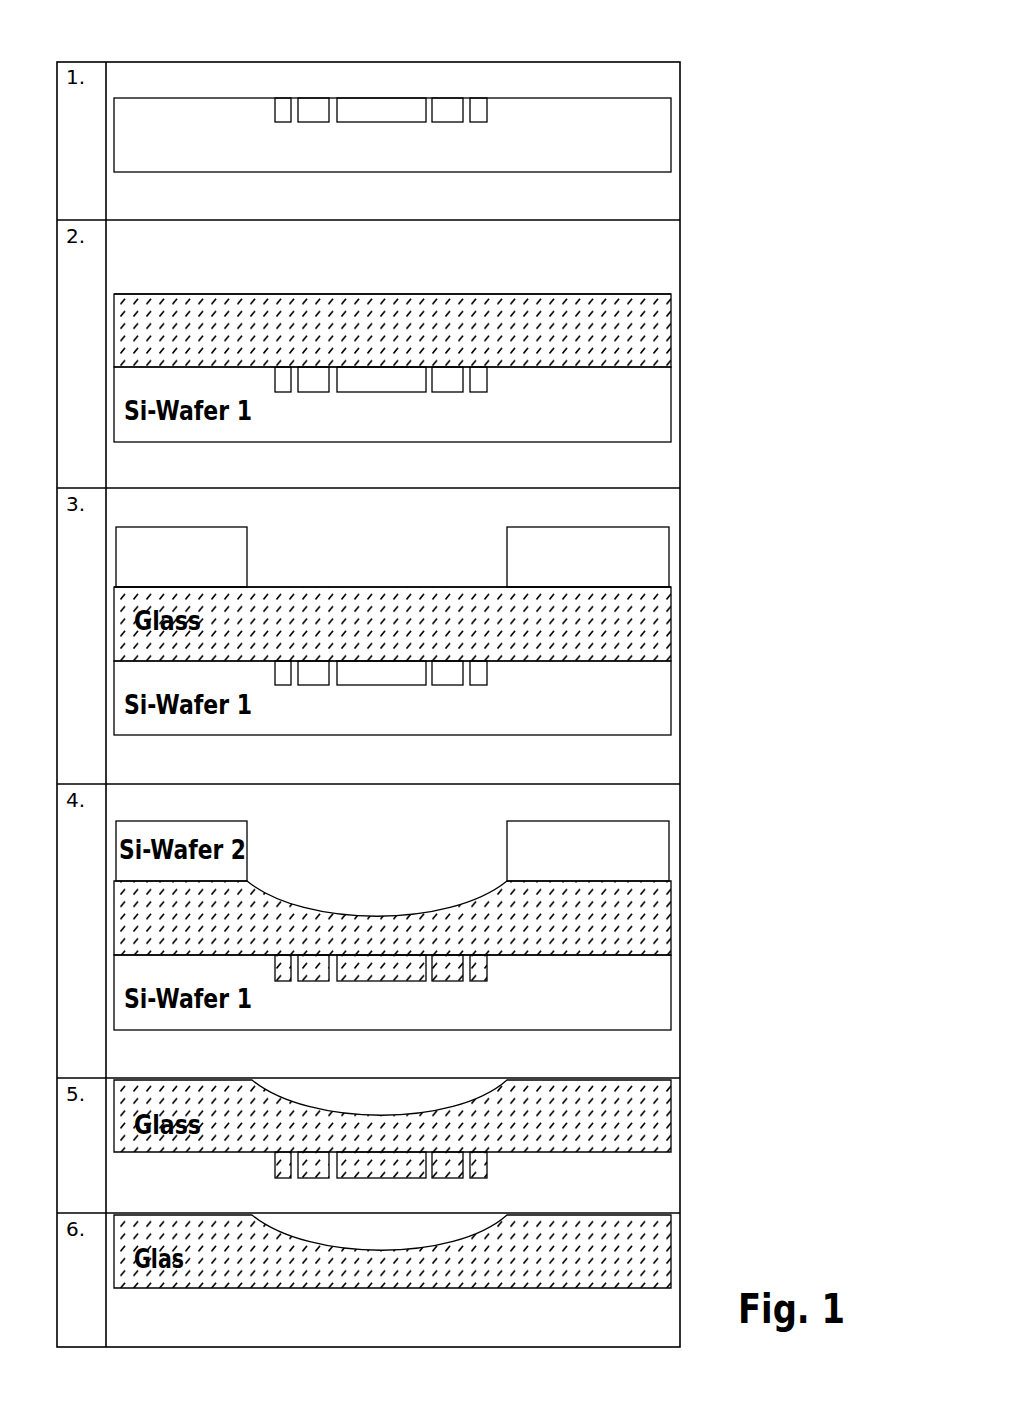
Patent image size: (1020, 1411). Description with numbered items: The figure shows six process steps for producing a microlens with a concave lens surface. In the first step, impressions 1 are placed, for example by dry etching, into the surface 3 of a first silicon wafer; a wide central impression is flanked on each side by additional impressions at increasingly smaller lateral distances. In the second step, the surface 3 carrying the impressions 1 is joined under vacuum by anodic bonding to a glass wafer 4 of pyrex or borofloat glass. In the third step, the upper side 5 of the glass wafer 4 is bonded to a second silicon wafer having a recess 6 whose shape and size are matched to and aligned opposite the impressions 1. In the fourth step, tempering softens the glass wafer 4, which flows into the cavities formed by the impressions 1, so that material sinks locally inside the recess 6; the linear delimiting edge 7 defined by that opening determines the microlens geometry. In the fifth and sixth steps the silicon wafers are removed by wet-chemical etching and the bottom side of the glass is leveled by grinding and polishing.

The impressions 1 is at (347, 193).
The surface 3 is at (535, 92).
The glass wafer 4 is at (392, 330).
The upper side 5 is at (472, 291).
The recess 6 is at (386, 563).
The linear delimiting edge 7 is at (498, 878).